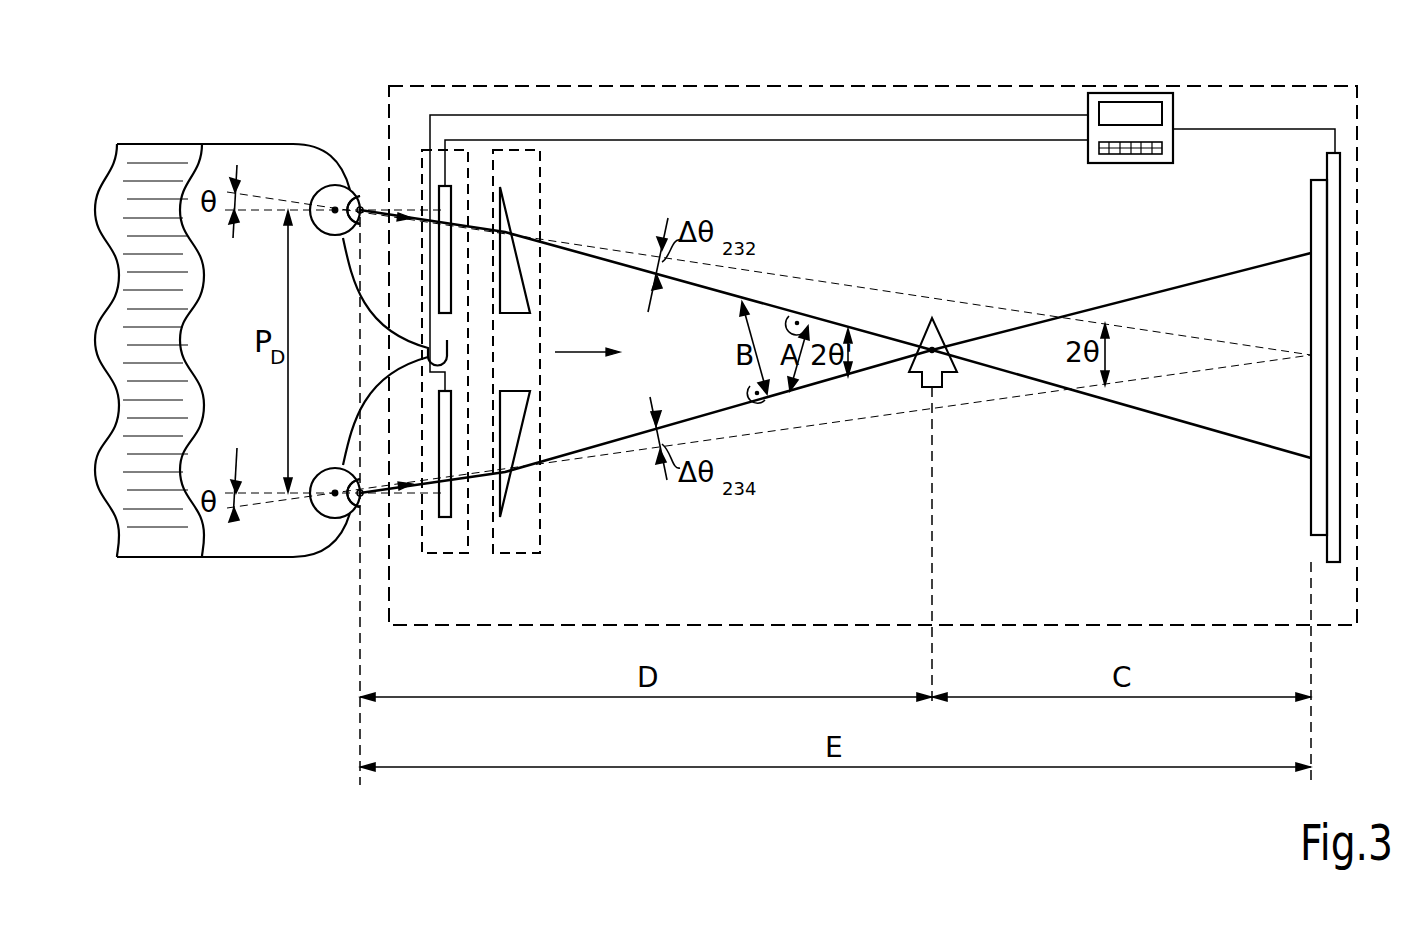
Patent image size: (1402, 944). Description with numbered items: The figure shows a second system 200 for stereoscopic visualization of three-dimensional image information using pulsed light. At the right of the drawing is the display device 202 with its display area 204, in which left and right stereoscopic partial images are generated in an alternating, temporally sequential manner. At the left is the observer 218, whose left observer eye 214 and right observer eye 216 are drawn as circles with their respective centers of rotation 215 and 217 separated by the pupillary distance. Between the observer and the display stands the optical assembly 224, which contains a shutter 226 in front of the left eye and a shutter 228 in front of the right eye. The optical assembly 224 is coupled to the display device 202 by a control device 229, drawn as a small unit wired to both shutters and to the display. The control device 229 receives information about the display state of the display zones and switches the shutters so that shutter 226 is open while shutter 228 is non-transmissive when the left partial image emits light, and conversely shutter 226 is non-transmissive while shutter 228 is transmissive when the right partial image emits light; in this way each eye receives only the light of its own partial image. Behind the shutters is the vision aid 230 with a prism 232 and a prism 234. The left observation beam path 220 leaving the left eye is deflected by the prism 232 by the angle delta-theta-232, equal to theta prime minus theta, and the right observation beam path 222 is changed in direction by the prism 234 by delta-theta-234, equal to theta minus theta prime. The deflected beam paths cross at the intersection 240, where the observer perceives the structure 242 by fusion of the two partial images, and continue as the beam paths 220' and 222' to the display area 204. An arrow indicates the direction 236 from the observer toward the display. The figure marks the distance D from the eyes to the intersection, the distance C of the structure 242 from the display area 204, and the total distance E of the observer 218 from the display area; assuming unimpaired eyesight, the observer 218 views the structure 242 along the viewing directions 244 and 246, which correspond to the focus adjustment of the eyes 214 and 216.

The system 200 is at (1187, 86).
The display device 202 is at (1327, 165).
The display area 204 is at (1311, 200).
The left observer eye 214 is at (335, 237).
The eye's center of rotation 215 is at (335, 210).
The right observer eye 216 is at (335, 467).
The eye's center of rotation 217 is at (333, 494).
The observer 218 is at (210, 558).
The left observation beam path 220 is at (646, 194).
The observation beam path 220' is at (1121, 418).
The right observation beam path 222 is at (618, 506).
The observation beam path 222' is at (1121, 288).
The optical assembly 224 is at (458, 553).
The shutter 226 is at (440, 292).
The shutter 228 is at (445, 517).
The control device 229 is at (1110, 163).
The vision aid 230 is at (540, 152).
The prism 232 is at (510, 214).
The prism 234 is at (508, 488).
The direction 236 is at (580, 352).
The intersection 240 is at (936, 322).
The structure 242 is at (944, 386).
The viewing direction 244 is at (378, 206).
The viewing direction 246 is at (377, 506).